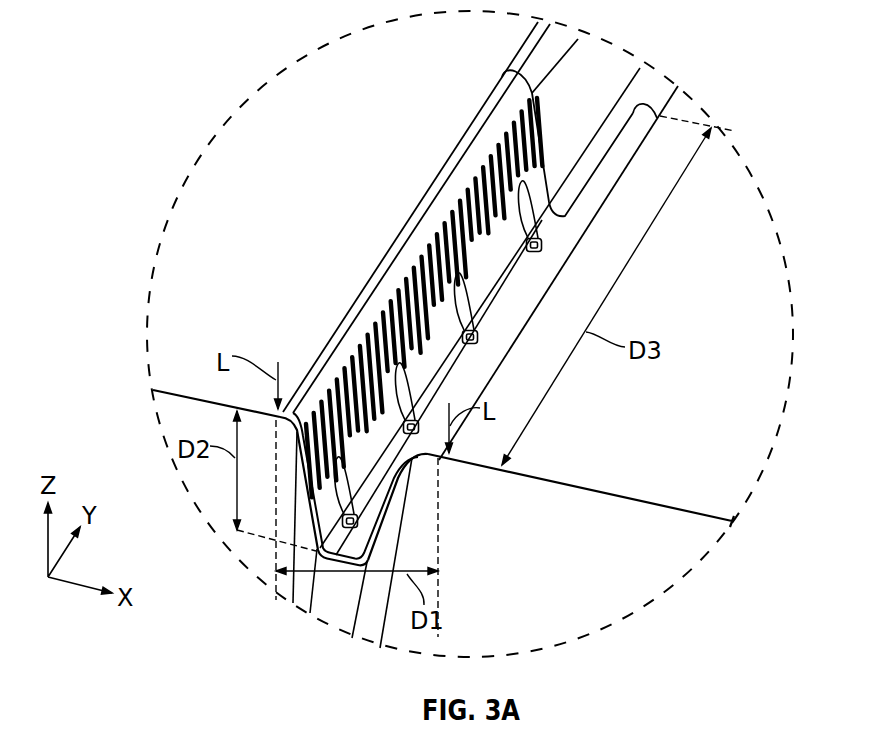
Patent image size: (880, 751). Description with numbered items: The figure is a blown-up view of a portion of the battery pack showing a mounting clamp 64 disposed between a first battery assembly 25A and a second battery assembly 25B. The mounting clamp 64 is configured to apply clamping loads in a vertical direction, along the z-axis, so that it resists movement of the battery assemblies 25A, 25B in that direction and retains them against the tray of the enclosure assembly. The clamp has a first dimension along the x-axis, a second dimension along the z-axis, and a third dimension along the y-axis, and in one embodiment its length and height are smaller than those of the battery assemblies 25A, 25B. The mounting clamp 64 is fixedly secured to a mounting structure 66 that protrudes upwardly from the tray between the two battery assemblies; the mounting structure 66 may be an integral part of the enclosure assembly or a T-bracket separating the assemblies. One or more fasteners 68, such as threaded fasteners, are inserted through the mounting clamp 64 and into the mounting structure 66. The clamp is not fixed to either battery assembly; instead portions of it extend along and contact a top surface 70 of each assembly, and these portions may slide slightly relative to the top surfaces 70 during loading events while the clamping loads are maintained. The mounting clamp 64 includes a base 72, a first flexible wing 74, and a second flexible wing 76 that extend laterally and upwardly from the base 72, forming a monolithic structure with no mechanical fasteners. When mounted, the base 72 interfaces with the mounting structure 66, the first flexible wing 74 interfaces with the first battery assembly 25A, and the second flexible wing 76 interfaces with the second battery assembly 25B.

The first battery assembly 25A is at (272, 223).
The second battery assembly 25B is at (737, 302).
The mounting clamp 64 is at (423, 172).
The mounting structure 66 is at (323, 595).
The fasteners 68 is at (300, 452).
The top surface 70 is at (168, 379).
The base 72 is at (355, 545).
The first flexible wing 74 is at (366, 333).
The second flexible wing 76 is at (532, 263).